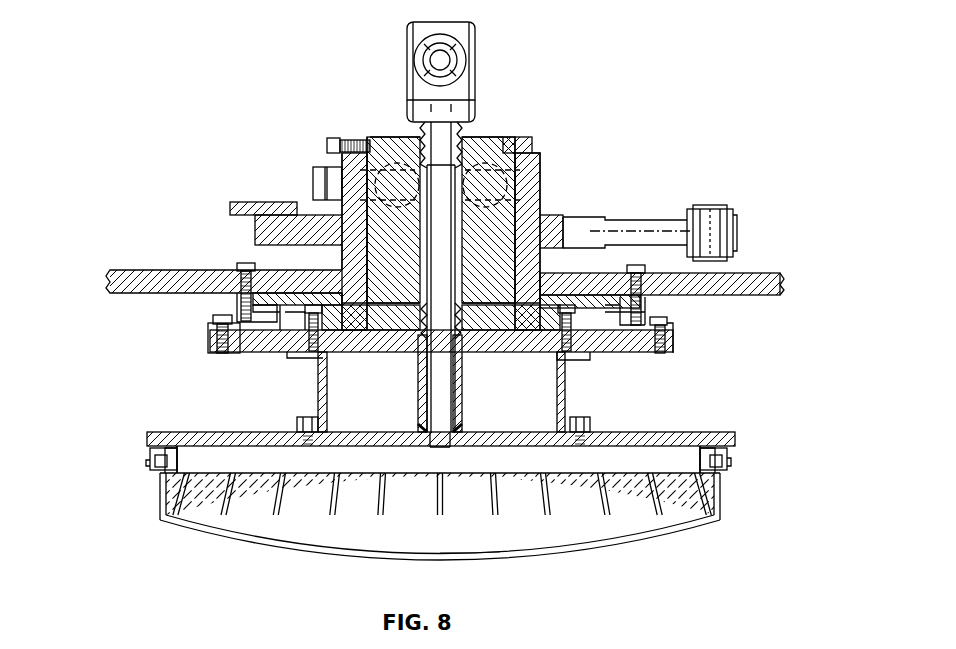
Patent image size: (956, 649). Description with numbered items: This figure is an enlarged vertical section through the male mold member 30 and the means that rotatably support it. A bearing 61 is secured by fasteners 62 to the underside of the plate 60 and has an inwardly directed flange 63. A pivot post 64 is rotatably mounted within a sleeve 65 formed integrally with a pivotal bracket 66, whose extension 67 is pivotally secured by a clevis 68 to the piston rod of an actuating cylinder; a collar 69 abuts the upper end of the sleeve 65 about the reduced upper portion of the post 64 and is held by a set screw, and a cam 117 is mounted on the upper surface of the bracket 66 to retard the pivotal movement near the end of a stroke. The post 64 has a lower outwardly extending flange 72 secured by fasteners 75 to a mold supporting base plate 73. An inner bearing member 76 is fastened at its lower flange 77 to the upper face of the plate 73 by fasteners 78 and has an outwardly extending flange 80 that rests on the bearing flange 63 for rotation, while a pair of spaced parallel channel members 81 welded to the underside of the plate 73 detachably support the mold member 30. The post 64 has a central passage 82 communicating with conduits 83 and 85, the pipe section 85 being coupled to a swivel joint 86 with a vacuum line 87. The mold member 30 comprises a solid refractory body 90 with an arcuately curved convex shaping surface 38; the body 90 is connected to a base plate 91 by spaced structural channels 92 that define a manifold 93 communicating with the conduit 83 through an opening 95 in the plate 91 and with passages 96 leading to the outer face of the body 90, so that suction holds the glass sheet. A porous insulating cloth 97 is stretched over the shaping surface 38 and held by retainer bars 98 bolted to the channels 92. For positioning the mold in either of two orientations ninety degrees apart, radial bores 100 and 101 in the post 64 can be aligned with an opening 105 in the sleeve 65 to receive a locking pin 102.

The male mold member 30 is at (195, 537).
The shaping surface 38 is at (305, 546).
The plate 60 is at (140, 275).
The bearing 61 is at (236, 307).
The fasteners 62 is at (243, 266).
The flange 63 is at (247, 342).
The pivot post 64 is at (502, 136).
The sleeve 65 is at (540, 185).
The pivotal bracket 66 is at (555, 237).
The extension 67 is at (648, 230).
The clevis 68 is at (733, 215).
The collar 69 is at (532, 148).
The flange 72 is at (345, 330).
The mold supporting base plate 73 is at (265, 352).
The fasteners 75 is at (318, 327).
The inner bearing member 76 is at (280, 345).
The lower flange 77 is at (235, 353).
The fasteners 78 is at (215, 320).
The flange 80 is at (268, 305).
The channel members 81 is at (327, 410).
The central passage 82 is at (441, 277).
The conduit 83 is at (460, 380).
The conduit 85 is at (420, 127).
The swivel joint 86 is at (468, 75).
The vacuum line 87 is at (450, 47).
The mold body 90 is at (255, 528).
The base plate 91 is at (160, 437).
The structural channels 92 is at (178, 462).
The manifold 93 is at (640, 456).
The opening 95 is at (432, 448).
The passages 96 is at (650, 540).
The insulating cloth 97 is at (490, 555).
The retainer bars 98 is at (158, 466).
The radial bore 100 is at (393, 160).
The radial bore 101 is at (483, 158).
The locking pin 102 is at (318, 178).
The opening 105 is at (380, 150).
The cam 117 is at (268, 208).